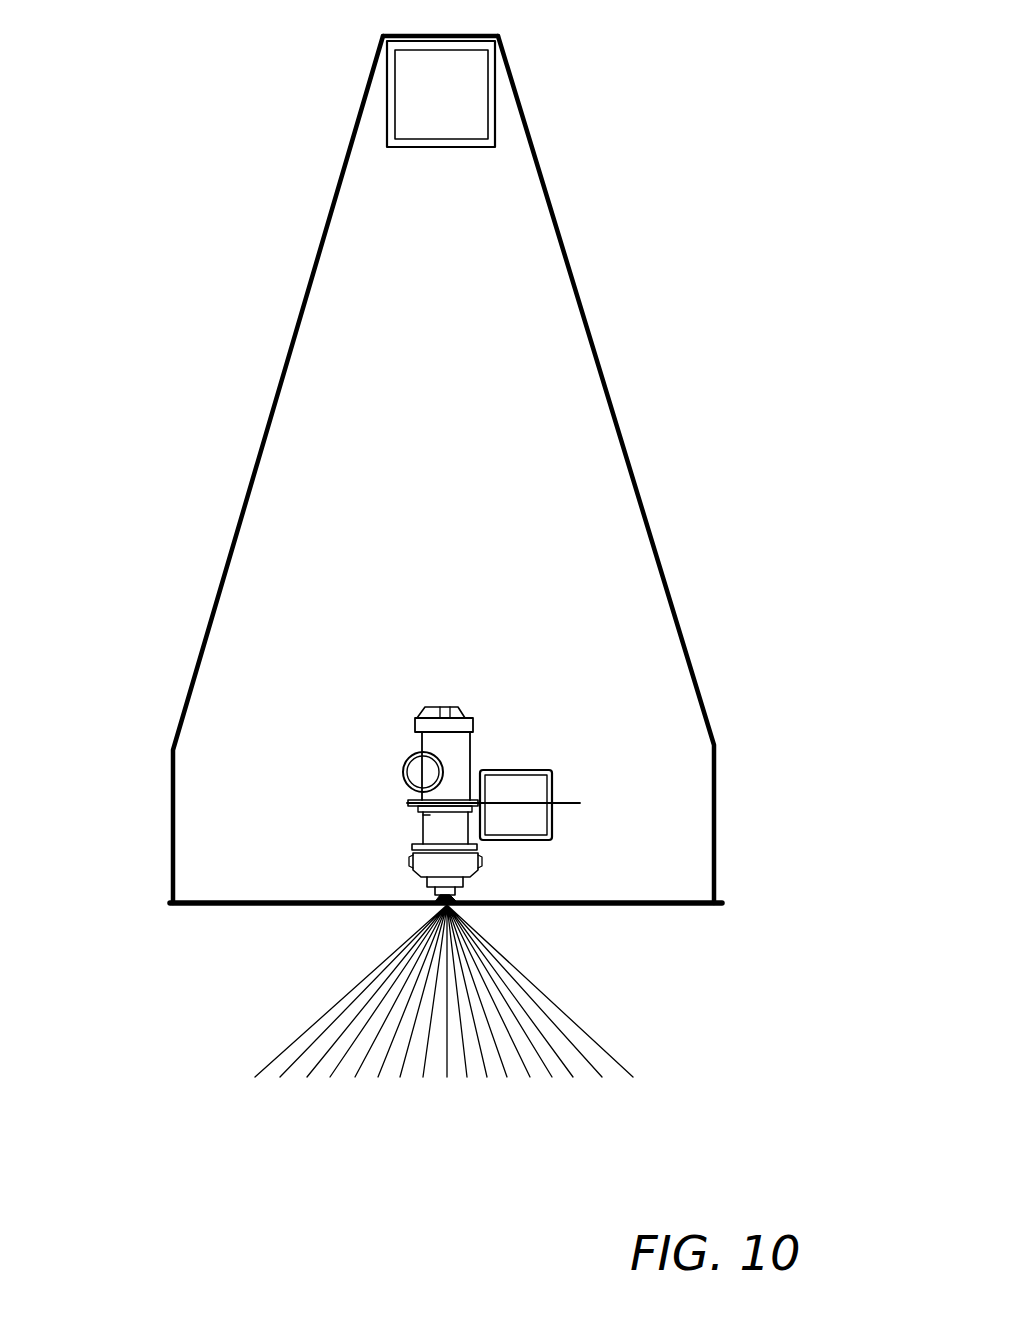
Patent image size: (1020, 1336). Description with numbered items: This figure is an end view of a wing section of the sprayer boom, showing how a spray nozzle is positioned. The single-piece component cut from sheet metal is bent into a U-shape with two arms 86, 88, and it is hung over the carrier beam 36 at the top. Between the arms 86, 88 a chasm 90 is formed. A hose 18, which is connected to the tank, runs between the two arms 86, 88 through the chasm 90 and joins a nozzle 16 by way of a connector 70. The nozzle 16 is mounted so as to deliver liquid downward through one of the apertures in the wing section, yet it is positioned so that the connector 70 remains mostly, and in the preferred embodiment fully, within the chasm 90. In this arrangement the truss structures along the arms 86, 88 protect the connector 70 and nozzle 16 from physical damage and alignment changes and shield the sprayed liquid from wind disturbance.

The nozzle 16 is at (465, 870).
The hose 18 is at (403, 778).
The carrier beam 36 is at (489, 90).
The connector 70 is at (430, 817).
The arm 86 is at (324, 250).
The arm 88 is at (563, 247).
The chasm 90 is at (478, 400).